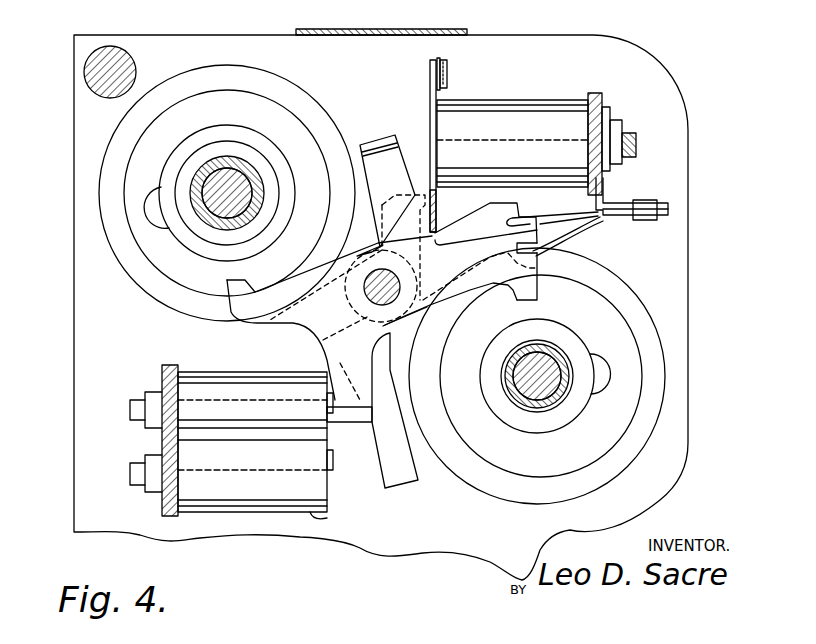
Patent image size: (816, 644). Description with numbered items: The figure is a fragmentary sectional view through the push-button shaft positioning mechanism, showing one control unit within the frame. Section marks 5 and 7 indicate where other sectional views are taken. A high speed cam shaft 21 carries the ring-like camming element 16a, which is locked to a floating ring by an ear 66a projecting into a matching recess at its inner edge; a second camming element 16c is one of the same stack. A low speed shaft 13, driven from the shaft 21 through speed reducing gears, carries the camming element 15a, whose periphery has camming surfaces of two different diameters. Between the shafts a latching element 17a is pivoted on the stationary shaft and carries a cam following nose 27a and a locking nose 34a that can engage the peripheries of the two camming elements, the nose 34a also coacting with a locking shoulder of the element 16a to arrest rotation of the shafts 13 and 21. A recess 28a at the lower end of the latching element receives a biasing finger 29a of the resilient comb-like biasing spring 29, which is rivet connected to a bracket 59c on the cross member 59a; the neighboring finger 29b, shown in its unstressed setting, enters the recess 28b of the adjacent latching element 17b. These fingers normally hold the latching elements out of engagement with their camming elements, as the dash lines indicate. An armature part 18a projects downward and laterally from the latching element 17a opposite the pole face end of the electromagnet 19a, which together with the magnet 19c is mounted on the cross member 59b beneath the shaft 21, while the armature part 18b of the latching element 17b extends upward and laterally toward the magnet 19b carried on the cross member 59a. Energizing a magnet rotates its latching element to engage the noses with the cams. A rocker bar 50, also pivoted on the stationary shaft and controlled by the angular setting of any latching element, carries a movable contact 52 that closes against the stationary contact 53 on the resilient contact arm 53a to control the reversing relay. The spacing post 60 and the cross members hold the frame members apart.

The section line 5 is at (90, 107).
The section line 7 is at (318, 96).
The shaft 13 is at (549, 368).
The camming element 15a is at (598, 306).
The camming element 16a is at (178, 116).
The camming element 16c is at (400, 482).
The latching element 17a is at (458, 305).
The latching element 17b is at (480, 218).
The armature part 18a is at (353, 424).
The armature part 18b is at (378, 137).
The electromagnet 19a is at (218, 372).
The magnet 19b is at (520, 102).
The magnet 19c is at (316, 514).
The shaft 21 is at (250, 183).
The cam following nose 27a is at (460, 287).
The recess 28a is at (540, 262).
The recess 28b is at (522, 228).
The comb-like biasing spring 29 is at (620, 216).
The biasing finger 29a is at (562, 234).
The biasing finger 29b is at (527, 222).
The locking nose 34a is at (246, 286).
The rocker bar 50 is at (428, 205).
The movable contact 52 is at (433, 66).
The stationary contact 53 is at (446, 62).
The resilient contact arm 53a is at (450, 82).
The cross member 59a is at (598, 96).
The cross member 59b is at (166, 366).
The bracket 59c is at (615, 203).
The spacing post 60 is at (116, 50).
The ear 66a is at (158, 223).